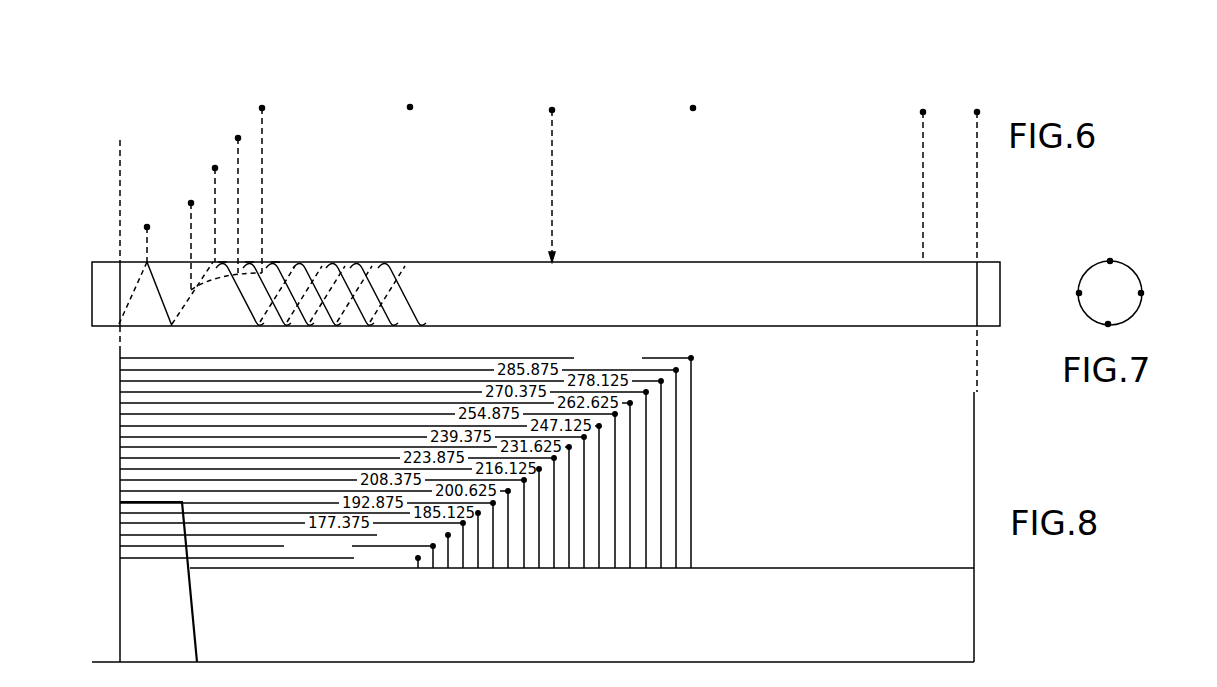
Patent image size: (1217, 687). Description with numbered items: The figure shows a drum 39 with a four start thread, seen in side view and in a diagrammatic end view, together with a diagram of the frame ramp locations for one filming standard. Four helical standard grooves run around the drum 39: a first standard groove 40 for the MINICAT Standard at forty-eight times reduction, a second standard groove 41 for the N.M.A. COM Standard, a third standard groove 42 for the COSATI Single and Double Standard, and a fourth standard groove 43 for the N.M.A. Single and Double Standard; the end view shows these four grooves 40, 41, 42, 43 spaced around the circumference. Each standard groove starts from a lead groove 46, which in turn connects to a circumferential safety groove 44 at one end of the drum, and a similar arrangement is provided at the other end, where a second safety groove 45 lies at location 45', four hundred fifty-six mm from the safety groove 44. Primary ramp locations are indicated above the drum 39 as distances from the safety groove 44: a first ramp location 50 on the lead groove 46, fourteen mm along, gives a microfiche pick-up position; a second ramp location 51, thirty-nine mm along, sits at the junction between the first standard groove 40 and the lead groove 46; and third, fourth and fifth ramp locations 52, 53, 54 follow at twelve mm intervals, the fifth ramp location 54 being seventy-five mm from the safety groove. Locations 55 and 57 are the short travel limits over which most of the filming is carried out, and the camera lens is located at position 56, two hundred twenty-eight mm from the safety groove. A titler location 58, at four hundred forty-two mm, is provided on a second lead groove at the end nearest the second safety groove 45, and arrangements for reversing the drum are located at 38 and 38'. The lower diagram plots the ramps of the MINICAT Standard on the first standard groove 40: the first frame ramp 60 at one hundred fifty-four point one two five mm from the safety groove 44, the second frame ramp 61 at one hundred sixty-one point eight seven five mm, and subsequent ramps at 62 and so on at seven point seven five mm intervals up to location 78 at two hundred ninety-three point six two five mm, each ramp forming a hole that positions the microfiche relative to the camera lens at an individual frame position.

In FIG. 6, the drum reversing arrangement 38 is at (138, 244).
In FIG. 6, the drum reversing arrangement 38' is at (541, 246).
In FIG. 6, the drum 39 is at (505, 262).
In FIG. 6, the first standard groove 40 is at (303, 262).
In FIG. 7, the first standard groove 40 is at (1110, 261).
In FIG. 6, the second standard groove 41 is at (275, 262).
In FIG. 7, the second standard groove 41 is at (1141, 293).
In FIG. 6, the third standard groove 42 is at (249, 262).
In FIG. 7, the third standard groove 42 is at (1108, 324).
In FIG. 6, the fourth standard groove 43 is at (222, 262).
In FIG. 7, the fourth standard groove 43 is at (1079, 293).
In FIG. 6, the circumferential safety groove 44 is at (118, 272).
In FIG. 6, the second safety groove 45 is at (998, 274).
In FIG. 6, the second safety groove location 45' is at (995, 231).
In FIG. 6, the lead groove 46 is at (165, 308).
In FIG. 6, the first ramp location 50 is at (147, 227).
In FIG. 6, the second ramp location 51 is at (191, 203).
In FIG. 6, the third ramp location 52 is at (215, 168).
In FIG. 6, the fourth ramp location 53 is at (238, 138).
In FIG. 6, the fifth ramp location 54 is at (262, 108).
In FIG. 6, the short travel limit 55 is at (410, 107).
In FIG. 6, the camera lens position 56 is at (552, 110).
In FIG. 6, the short travel limit 57 is at (693, 108).
In FIG. 6, the titler location 58 is at (923, 112).
In FIG. 8, the first frame ramp 60 is at (416, 561).
In FIG. 8, the second frame ramp 61 is at (433, 549).
In FIG. 8, the third frame ramp 62 is at (448, 538).
In FIG. 8, the last frame ramp location 78 is at (691, 358).